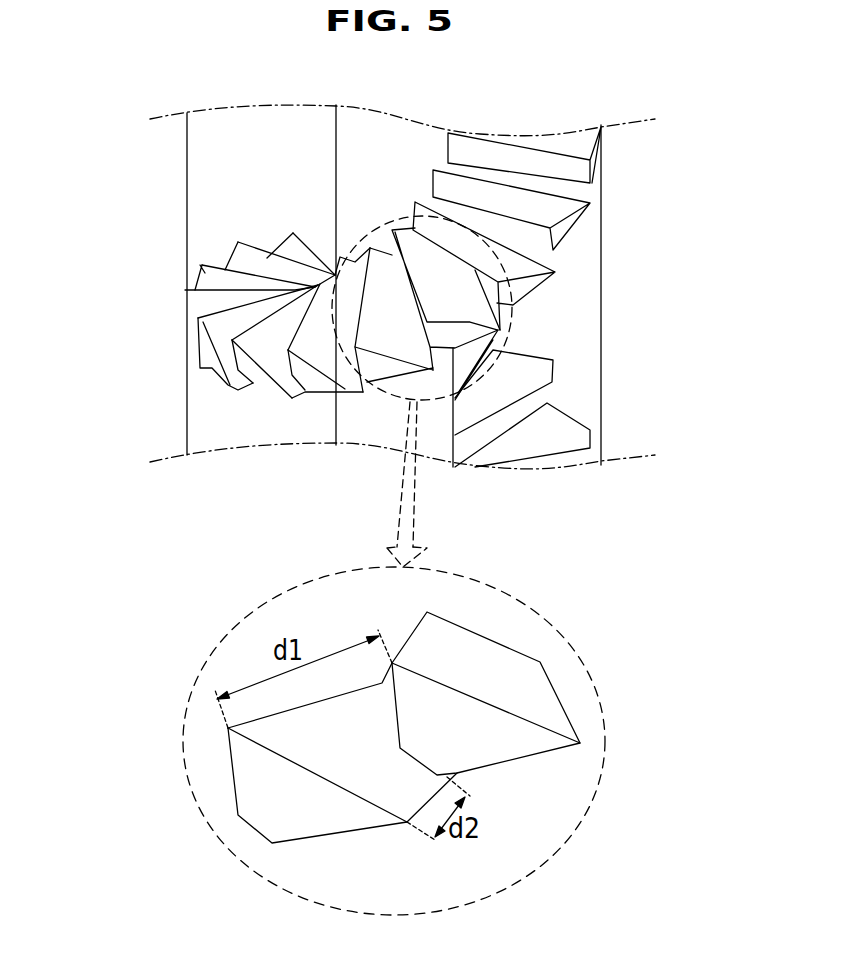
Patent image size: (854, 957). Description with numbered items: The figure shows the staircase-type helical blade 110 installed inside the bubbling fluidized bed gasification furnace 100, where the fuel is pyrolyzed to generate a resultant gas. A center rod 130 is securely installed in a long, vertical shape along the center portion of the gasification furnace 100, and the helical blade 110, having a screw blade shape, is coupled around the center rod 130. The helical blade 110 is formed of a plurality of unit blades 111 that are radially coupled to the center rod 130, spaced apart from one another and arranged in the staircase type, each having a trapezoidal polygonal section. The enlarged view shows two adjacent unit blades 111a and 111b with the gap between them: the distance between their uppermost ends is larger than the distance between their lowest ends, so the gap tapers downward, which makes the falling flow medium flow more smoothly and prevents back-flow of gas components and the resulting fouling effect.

The bubbling fluidized bed gasification furnace 100 is at (187, 169).
The center rod 130 is at (336, 170).
The unit blades 111 is at (203, 271).
The helical blade 110 is at (568, 295).
The unit blade 111a is at (212, 770).
The unit blade 111b is at (580, 685).